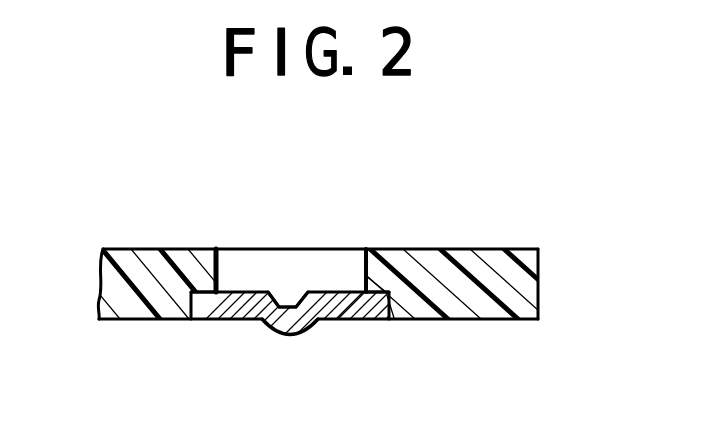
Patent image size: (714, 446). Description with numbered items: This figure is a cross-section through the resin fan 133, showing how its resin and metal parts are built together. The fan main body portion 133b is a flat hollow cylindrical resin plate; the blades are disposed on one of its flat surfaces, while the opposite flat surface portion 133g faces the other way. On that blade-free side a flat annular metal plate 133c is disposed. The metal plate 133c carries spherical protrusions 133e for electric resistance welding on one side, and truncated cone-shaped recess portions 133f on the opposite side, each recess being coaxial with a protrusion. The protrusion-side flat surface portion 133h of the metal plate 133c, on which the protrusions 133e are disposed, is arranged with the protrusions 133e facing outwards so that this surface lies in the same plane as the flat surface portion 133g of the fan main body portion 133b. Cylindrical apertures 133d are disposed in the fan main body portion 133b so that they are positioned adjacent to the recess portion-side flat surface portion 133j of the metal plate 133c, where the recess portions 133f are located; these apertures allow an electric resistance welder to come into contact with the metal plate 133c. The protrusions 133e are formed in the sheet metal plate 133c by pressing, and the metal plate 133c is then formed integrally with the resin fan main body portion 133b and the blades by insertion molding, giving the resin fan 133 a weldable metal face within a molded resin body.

The resin fan 133 is at (169, 246).
The fan main body portion 133b is at (122, 249).
The metal plate 133c is at (377, 287).
The cylindrical apertures 133d is at (338, 268).
The spherical protrusions 133e is at (297, 337).
The truncated cone-shaped recess portions 133f is at (302, 291).
The flat surface portion 133g is at (137, 321).
The protrusion-side flat surface portion 133h is at (233, 321).
The recess portion-side flat surface portion 133j is at (217, 201).